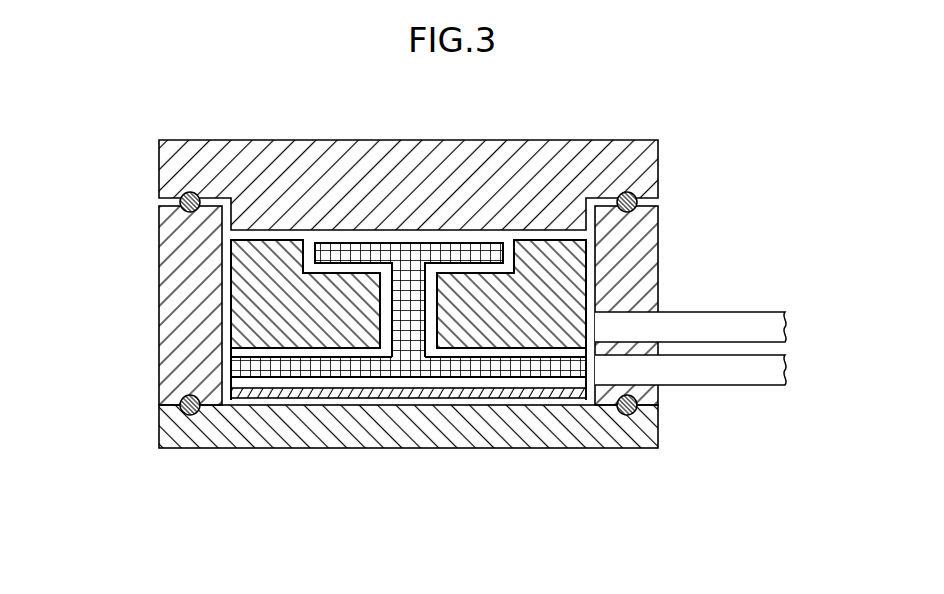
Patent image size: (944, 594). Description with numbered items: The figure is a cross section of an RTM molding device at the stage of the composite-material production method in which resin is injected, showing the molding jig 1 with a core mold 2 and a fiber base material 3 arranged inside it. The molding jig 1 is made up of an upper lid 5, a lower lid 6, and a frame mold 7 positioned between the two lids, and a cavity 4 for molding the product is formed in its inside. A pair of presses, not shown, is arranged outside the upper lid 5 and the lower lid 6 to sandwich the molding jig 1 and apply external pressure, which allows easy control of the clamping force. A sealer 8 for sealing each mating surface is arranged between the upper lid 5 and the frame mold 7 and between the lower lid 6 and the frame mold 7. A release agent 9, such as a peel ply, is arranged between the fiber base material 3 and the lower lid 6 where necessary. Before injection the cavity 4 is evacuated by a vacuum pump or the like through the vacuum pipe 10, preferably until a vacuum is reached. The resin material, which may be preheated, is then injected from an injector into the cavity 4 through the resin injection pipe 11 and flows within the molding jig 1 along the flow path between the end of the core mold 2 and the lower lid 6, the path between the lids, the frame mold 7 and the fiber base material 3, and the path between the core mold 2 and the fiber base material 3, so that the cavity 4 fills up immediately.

The molding jig 1 is at (643, 235).
The core mold 2 is at (248, 290).
The fiber base material 3 is at (395, 372).
The cavity 4 is at (309, 240).
The upper lid 5 is at (550, 158).
The lower lid 6 is at (592, 432).
The frame mold 7 is at (632, 273).
The sealer 8 is at (632, 193).
The release agent 9 is at (290, 393).
The vacuum pipe 10 is at (760, 378).
The resin injection pipe 11 is at (763, 320).